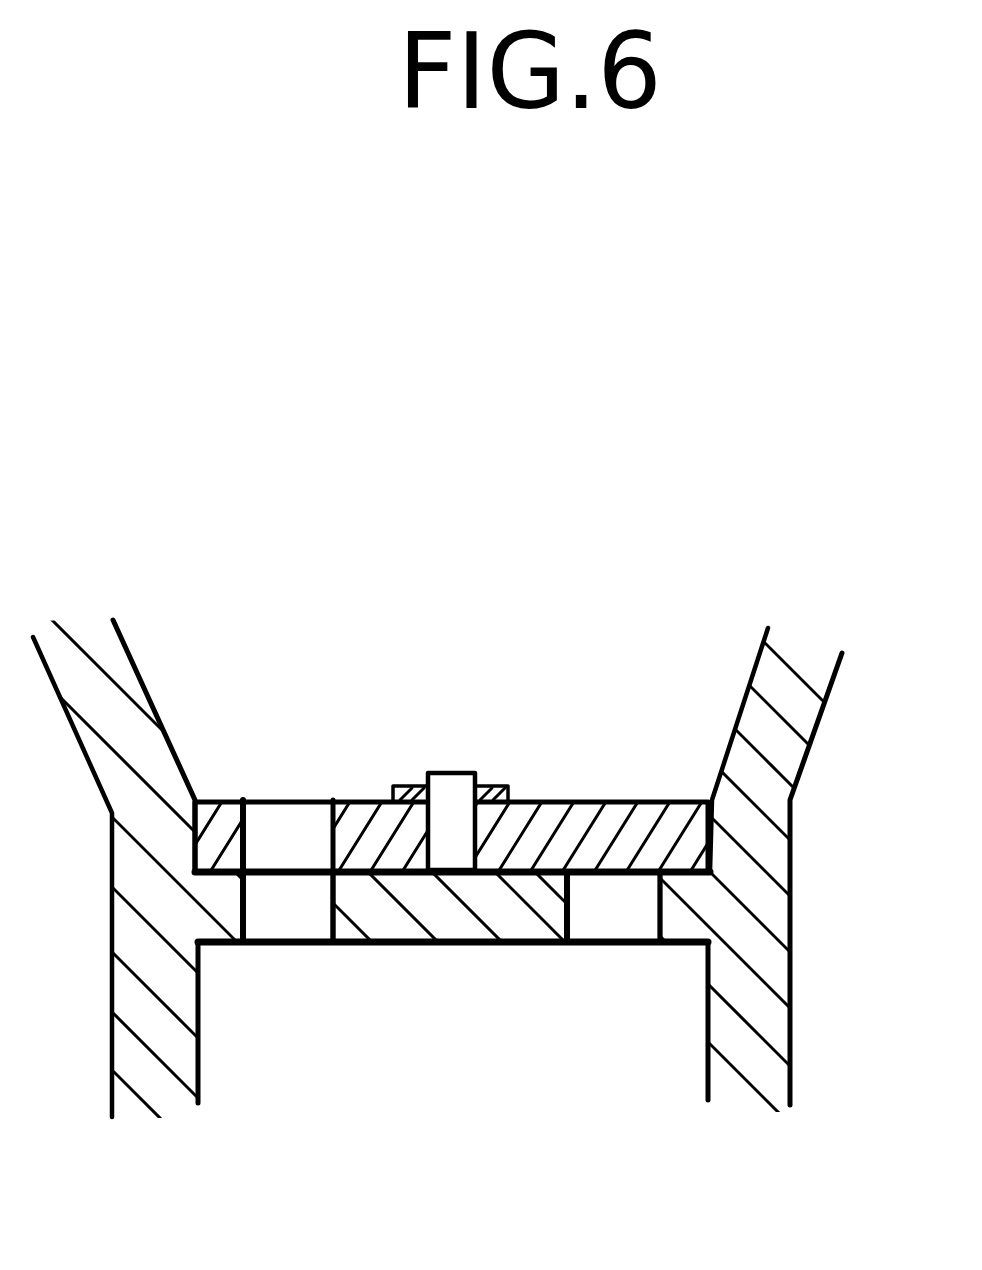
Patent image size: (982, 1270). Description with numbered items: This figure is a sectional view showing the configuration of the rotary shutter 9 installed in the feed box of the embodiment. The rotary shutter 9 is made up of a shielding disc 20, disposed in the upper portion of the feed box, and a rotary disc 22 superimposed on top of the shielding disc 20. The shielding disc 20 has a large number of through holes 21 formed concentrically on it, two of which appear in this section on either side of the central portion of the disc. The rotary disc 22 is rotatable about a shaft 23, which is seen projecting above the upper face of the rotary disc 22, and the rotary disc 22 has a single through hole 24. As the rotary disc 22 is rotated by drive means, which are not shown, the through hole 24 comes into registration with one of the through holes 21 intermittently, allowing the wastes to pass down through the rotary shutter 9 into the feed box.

The rotary shutter 9 is at (592, 612).
The shielding disc 20 is at (472, 905).
The through holes 21 is at (277, 912).
The rotary disc 22 is at (617, 835).
The shaft 23 is at (452, 800).
The through hole 24 is at (248, 842).